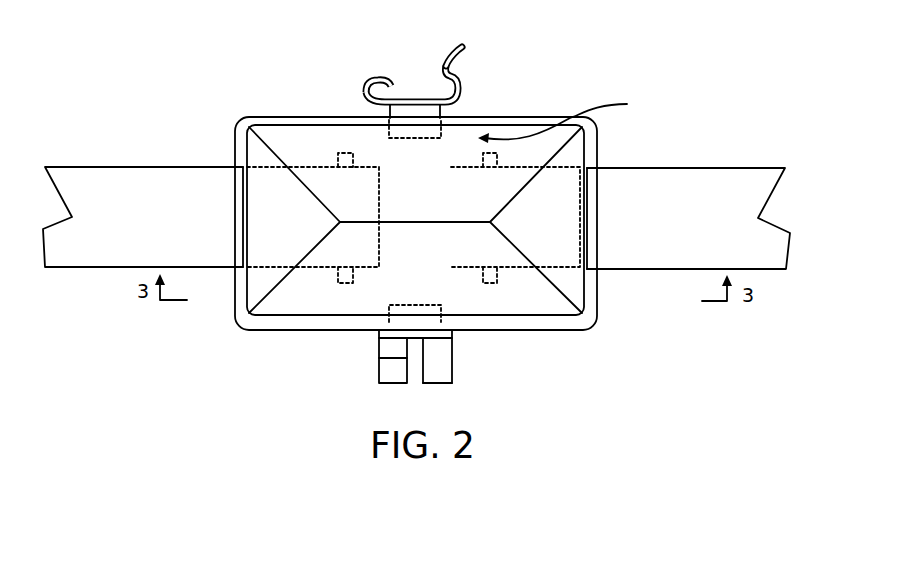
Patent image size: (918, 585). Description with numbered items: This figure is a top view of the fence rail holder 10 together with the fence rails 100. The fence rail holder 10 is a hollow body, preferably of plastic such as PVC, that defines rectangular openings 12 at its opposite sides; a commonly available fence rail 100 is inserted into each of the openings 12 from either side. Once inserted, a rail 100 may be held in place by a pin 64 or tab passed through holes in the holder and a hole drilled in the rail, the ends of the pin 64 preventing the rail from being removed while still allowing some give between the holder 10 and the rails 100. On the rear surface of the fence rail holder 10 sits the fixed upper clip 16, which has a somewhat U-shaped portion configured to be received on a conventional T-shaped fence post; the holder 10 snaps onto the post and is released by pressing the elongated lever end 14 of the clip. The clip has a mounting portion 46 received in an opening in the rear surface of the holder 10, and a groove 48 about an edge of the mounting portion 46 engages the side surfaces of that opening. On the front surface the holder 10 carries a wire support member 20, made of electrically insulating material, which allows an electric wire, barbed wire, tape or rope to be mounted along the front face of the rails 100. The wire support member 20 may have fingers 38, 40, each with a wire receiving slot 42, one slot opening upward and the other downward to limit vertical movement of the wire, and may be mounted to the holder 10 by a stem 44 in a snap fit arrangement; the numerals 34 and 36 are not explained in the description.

The fence rail holder 10 is at (582, 322).
The rectangular openings 12 is at (243, 253).
The elongated lever end 14 is at (468, 53).
The fixed upper clip 16 is at (367, 85).
The wire support member 20 is at (445, 359).
The clip arm 34 is at (467, 92).
The clip base 36 is at (364, 97).
The finger 38 is at (452, 383).
The finger 40 is at (379, 376).
The wire receiving slot 42 is at (379, 347).
The stem 44 is at (433, 322).
The mounting portion 46 is at (566, 116).
The groove 48 is at (402, 120).
The pin 64 is at (340, 160).
The fence rail 100 is at (145, 188).